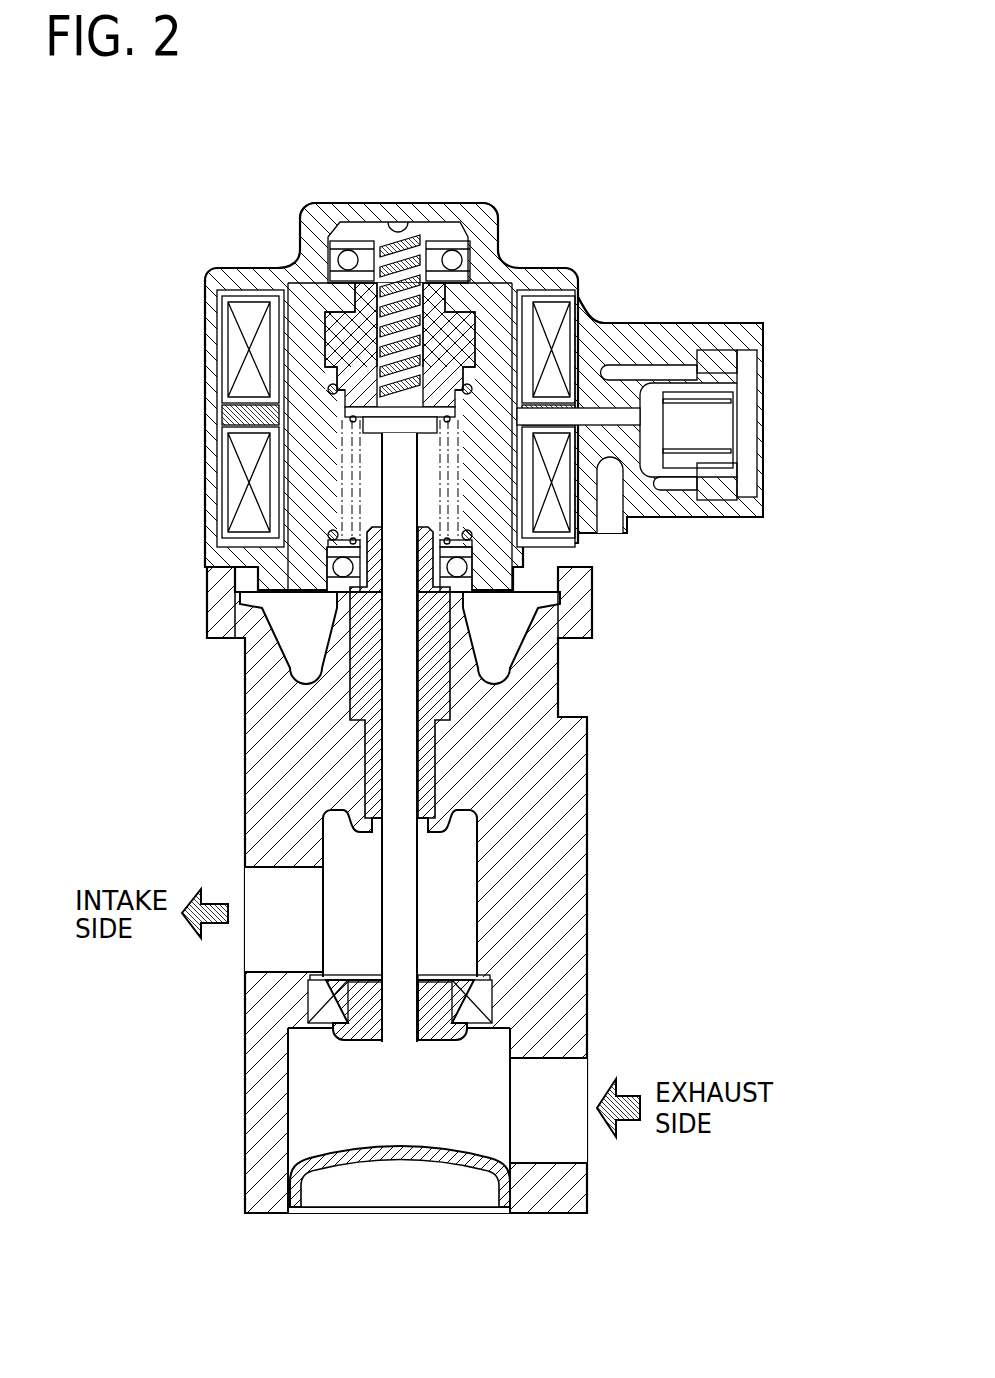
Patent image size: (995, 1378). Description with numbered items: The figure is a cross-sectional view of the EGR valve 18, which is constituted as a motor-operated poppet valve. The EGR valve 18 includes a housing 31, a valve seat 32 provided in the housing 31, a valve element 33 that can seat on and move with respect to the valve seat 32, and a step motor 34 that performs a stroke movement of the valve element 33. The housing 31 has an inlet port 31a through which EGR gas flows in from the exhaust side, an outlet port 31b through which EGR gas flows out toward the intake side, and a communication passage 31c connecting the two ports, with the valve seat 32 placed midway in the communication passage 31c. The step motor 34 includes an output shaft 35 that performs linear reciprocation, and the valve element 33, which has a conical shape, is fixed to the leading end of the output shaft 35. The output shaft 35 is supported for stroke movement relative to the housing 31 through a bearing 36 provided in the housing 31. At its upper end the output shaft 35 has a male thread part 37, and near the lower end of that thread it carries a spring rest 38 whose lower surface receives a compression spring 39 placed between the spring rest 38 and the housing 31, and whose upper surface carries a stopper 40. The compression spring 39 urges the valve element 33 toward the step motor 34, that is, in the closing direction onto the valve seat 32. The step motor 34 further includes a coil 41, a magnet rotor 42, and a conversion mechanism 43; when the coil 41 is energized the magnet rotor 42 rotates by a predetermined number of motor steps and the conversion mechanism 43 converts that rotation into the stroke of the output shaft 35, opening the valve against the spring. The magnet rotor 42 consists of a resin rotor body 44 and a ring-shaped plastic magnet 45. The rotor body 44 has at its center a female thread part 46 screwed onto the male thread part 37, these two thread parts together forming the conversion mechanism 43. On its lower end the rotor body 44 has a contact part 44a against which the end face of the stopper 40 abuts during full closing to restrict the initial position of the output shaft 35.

The EGR valve 18 is at (499, 130).
The housing 31 is at (267, 716).
The inlet port 31a is at (568, 1160).
The outlet port 31b is at (262, 965).
The communication passage 31c is at (457, 857).
The valve seat 32 is at (472, 1008).
The valve element 33 is at (430, 976).
The step motor 34 is at (675, 155).
The output shaft 35 is at (398, 758).
The bearing 36 is at (443, 678).
The male thread part 37 is at (372, 300).
The spring rest 38 is at (347, 402).
The compression spring 39 is at (347, 488).
The stopper 40 is at (597, 537).
The coil 41 is at (570, 272).
The magnet rotor 42 is at (515, 272).
The conversion mechanism 43 is at (438, 336).
The rotor body 44 is at (300, 292).
The contact part 44a is at (600, 338).
The plastic magnet 45 is at (565, 598).
The female thread part 46 is at (347, 327).